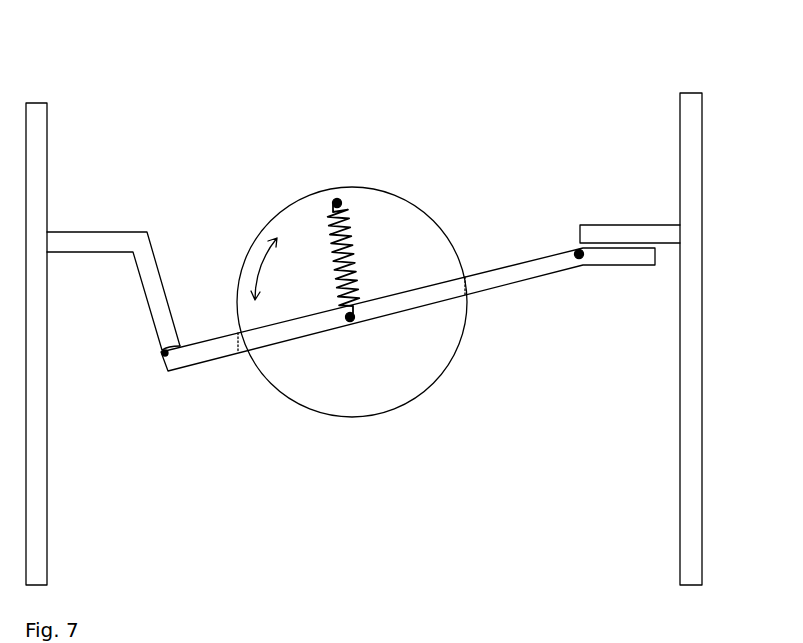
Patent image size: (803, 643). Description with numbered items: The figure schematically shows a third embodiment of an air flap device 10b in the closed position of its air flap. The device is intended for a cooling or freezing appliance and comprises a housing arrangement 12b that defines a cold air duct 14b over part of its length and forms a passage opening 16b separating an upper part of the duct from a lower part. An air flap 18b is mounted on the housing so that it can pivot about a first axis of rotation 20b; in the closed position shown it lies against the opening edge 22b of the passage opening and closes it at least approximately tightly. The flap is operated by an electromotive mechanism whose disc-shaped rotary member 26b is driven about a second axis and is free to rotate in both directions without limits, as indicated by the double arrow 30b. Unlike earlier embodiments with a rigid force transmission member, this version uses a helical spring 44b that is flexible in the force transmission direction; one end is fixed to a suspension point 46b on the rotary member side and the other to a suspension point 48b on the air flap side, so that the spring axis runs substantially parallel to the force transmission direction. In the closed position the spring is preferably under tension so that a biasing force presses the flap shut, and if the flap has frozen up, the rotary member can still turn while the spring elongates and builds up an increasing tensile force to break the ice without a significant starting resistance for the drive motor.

The air flap device 10b is at (400, 302).
The housing arrangement 12b is at (702, 126).
The cold air duct 14b is at (216, 101).
The passage opening 16b is at (168, 370).
The air flap 18b is at (365, 319).
The first axis of rotation 20b is at (576, 251).
The opening edge 22b is at (163, 371).
The rotary member 26b is at (417, 397).
The double arrow 30b is at (258, 267).
The helical spring 44b is at (375, 256).
The suspension point on the rotary member side 46b is at (336, 201).
The suspension point on the air flap side 48b is at (358, 316).